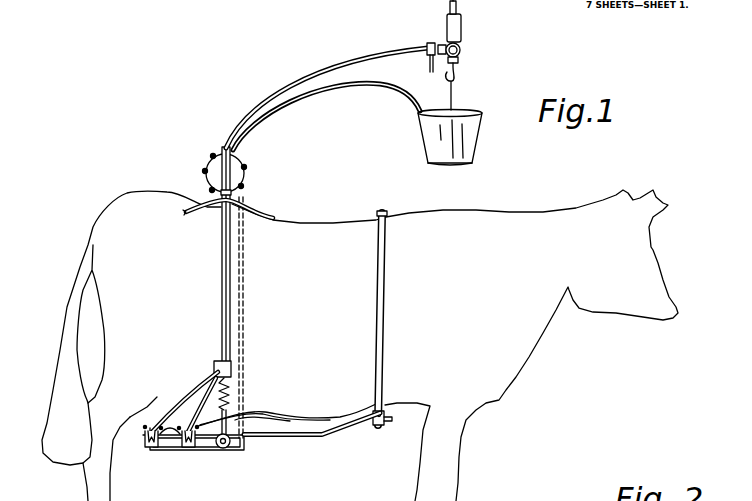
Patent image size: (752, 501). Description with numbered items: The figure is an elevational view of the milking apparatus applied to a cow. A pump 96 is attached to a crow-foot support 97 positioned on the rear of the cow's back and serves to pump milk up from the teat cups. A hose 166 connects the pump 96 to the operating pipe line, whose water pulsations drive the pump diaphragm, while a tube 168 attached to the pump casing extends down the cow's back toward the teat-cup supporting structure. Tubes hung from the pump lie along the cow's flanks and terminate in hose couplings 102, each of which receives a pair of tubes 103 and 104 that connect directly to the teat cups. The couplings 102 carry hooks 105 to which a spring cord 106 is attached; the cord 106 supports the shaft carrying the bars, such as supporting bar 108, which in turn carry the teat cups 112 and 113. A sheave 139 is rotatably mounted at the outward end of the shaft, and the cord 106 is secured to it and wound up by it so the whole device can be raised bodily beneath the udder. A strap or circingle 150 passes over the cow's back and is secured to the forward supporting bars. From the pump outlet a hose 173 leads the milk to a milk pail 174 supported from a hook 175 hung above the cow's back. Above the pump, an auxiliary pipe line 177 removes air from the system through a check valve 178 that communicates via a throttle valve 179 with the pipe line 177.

The pump 96 is at (242, 170).
The crow-foot support 97 is at (208, 212).
The hose couplings 102 is at (229, 367).
The tube 103 is at (172, 406).
The tube 104 is at (200, 395).
The hooks 105 is at (231, 388).
The spring cord 106 is at (231, 419).
The supporting bar 108 is at (333, 437).
The teat cup 112 is at (191, 450).
The teat cup 113 is at (152, 452).
The sheave 139 is at (232, 447).
The strap or circingle 150 is at (387, 255).
The hose 166 is at (314, 70).
The tube 168 is at (274, 420).
The hose 173 is at (328, 88).
The milk pail 174 is at (456, 140).
The hook 175 is at (459, 66).
The auxiliary pipe line 177 is at (458, 1).
The check valve 178 is at (462, 30).
The throttle valve 179 is at (449, 7).